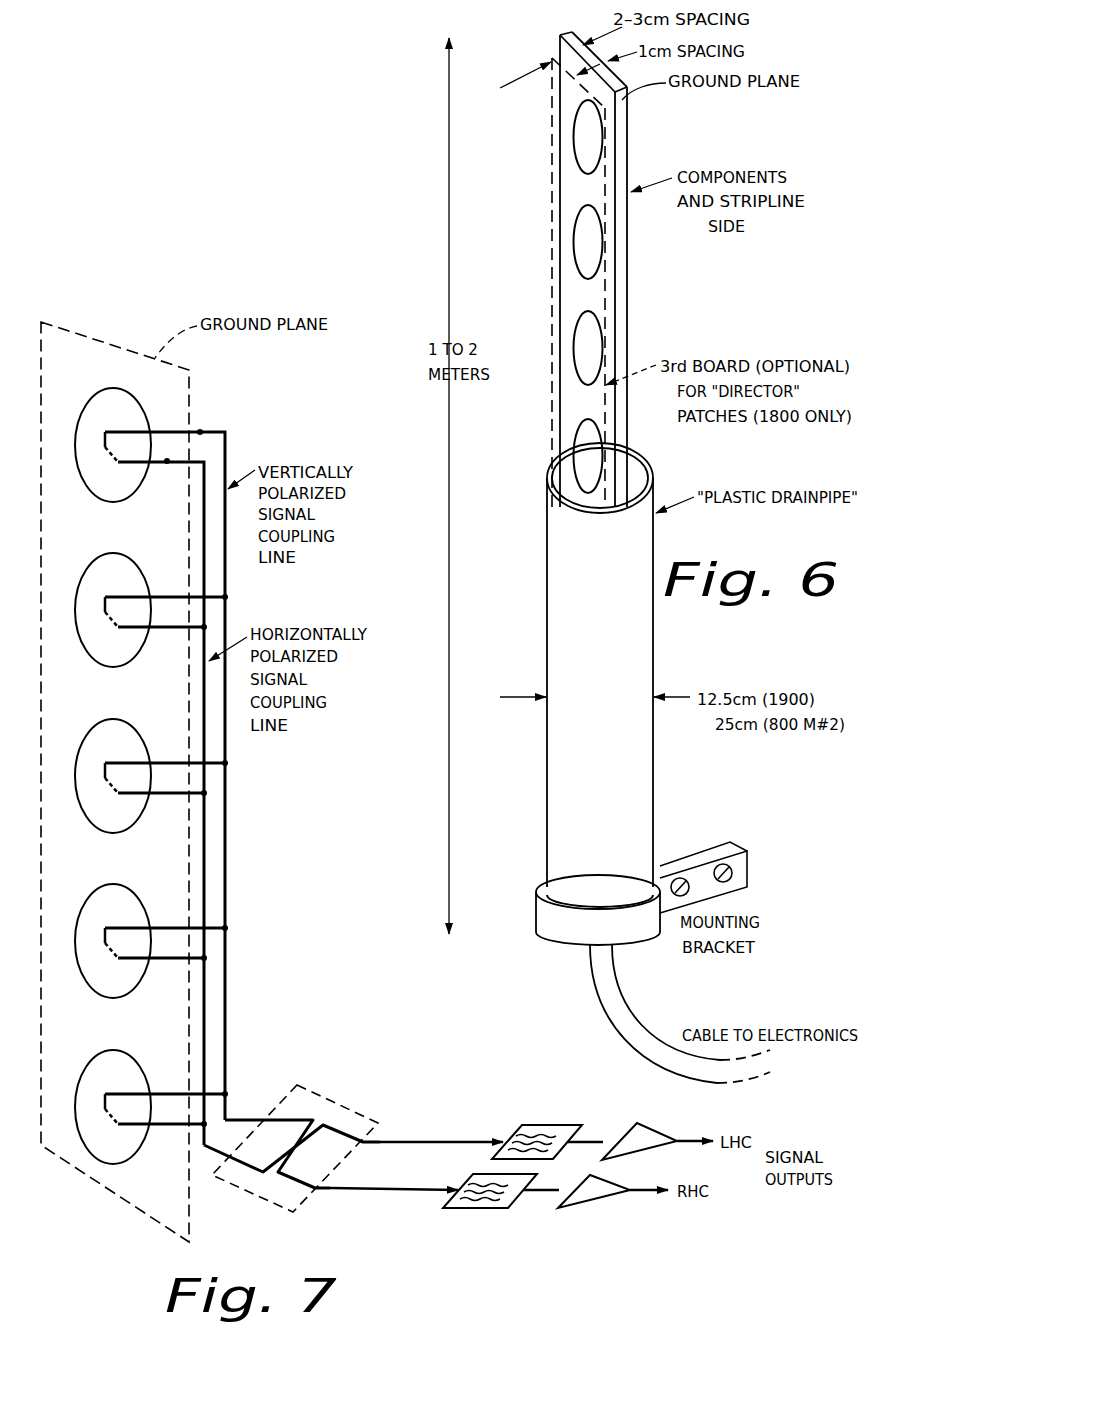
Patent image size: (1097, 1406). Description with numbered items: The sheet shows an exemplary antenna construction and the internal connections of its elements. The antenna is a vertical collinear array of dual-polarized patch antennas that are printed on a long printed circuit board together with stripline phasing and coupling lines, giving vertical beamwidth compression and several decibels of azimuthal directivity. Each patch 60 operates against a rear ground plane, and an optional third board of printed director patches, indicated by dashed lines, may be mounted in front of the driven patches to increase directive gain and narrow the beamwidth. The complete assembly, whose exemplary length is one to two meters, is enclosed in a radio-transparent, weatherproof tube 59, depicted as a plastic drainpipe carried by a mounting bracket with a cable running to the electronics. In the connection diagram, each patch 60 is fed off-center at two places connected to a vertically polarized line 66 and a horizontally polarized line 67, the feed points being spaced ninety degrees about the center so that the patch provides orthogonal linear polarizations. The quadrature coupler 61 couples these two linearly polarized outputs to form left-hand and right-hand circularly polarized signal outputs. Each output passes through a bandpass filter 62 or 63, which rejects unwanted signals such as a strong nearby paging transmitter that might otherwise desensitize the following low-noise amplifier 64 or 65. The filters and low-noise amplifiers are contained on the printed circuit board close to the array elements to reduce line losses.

In FIG. 6, the tube 59 is at (551, 615).
In FIG. 7, the patch 60 is at (113, 402).
In FIG. 6, the patch 60 is at (578, 335).
In FIG. 7, the quadrature coupler 61 is at (302, 1087).
In FIG. 7, the bandpass filter 62 is at (472, 1210).
In FIG. 7, the bandpass filter 63 is at (532, 1125).
In FIG. 7, the low-noise amplifier 64 is at (590, 1201).
In FIG. 7, the low-noise amplifier 65 is at (648, 1129).
In FIG. 7, the line 66 is at (202, 430).
In FIG. 7, the line 67 is at (167, 464).